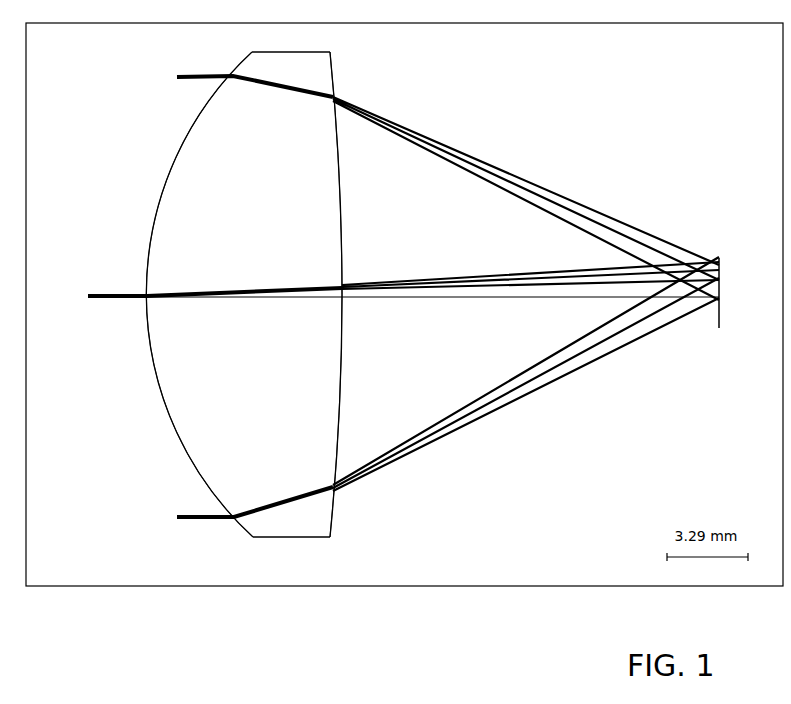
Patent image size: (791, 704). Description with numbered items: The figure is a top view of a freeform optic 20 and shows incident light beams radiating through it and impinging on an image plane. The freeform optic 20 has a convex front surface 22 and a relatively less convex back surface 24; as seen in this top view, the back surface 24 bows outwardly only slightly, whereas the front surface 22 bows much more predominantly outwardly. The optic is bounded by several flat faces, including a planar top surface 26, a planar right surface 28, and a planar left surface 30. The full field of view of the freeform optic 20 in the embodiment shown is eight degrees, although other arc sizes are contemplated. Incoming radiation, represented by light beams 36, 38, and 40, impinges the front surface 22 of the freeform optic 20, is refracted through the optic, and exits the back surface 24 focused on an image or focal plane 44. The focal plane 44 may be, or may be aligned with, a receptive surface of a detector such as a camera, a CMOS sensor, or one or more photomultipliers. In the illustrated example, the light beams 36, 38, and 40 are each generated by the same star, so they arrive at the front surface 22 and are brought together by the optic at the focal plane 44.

The freeform optic 20 is at (187, 395).
The convex front surface 22 is at (160, 206).
The back surface 24 is at (341, 197).
The planar top surface 26 is at (312, 368).
The planar right surface 28 is at (288, 538).
The planar left surface 30 is at (286, 52).
The light beam 36 is at (195, 74).
The light beam 38 is at (117, 290).
The light beam 40 is at (190, 521).
The image or focal plane 44 is at (718, 312).